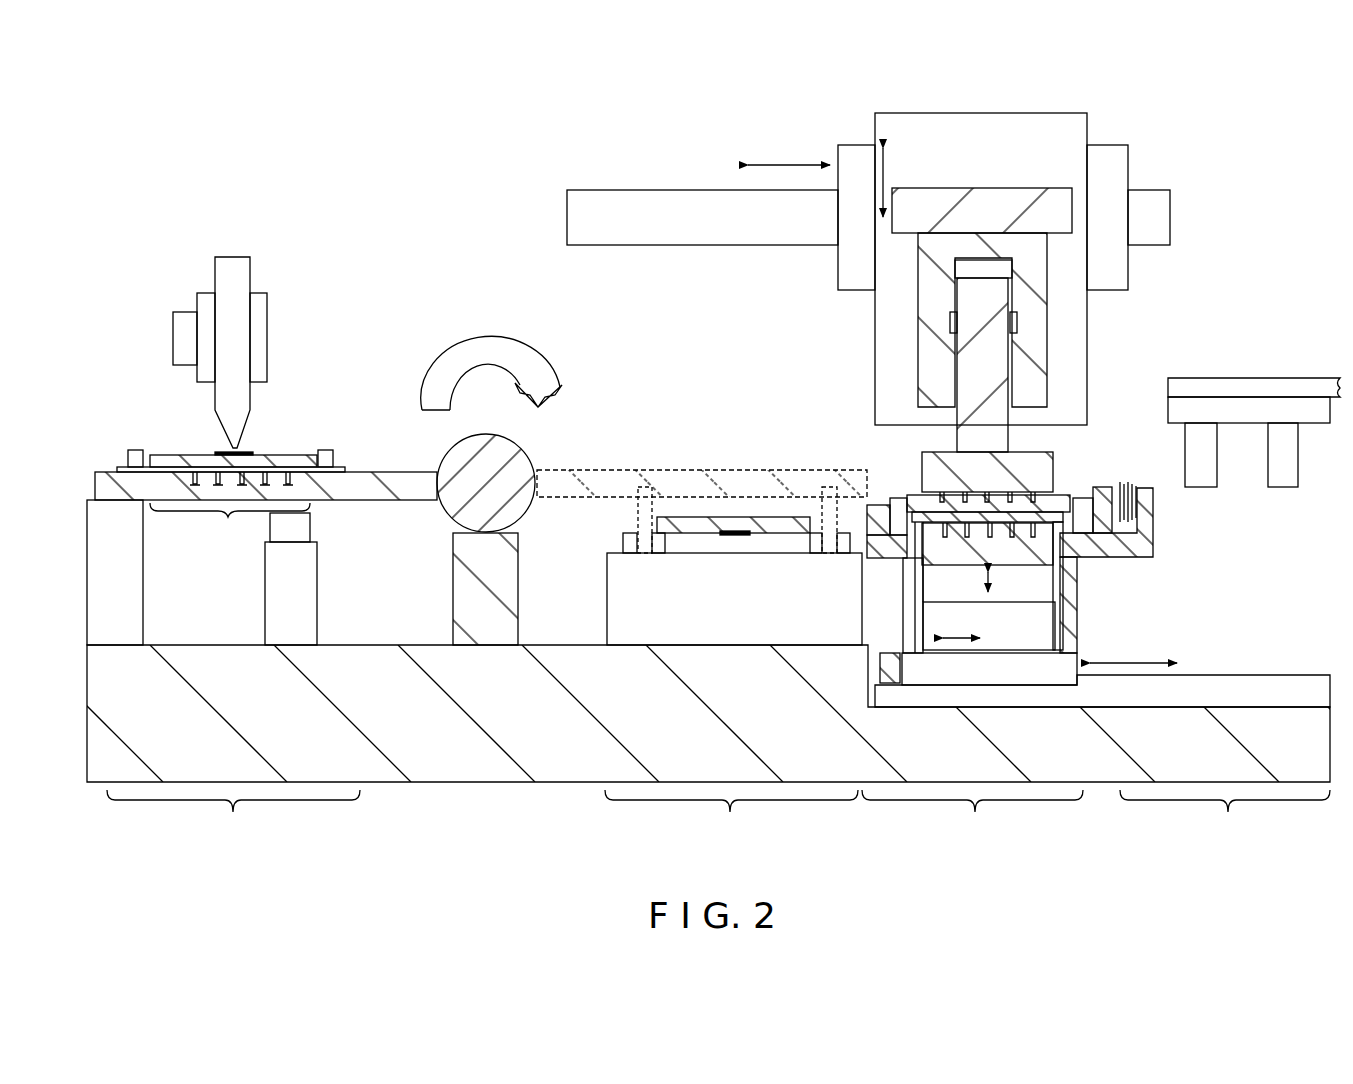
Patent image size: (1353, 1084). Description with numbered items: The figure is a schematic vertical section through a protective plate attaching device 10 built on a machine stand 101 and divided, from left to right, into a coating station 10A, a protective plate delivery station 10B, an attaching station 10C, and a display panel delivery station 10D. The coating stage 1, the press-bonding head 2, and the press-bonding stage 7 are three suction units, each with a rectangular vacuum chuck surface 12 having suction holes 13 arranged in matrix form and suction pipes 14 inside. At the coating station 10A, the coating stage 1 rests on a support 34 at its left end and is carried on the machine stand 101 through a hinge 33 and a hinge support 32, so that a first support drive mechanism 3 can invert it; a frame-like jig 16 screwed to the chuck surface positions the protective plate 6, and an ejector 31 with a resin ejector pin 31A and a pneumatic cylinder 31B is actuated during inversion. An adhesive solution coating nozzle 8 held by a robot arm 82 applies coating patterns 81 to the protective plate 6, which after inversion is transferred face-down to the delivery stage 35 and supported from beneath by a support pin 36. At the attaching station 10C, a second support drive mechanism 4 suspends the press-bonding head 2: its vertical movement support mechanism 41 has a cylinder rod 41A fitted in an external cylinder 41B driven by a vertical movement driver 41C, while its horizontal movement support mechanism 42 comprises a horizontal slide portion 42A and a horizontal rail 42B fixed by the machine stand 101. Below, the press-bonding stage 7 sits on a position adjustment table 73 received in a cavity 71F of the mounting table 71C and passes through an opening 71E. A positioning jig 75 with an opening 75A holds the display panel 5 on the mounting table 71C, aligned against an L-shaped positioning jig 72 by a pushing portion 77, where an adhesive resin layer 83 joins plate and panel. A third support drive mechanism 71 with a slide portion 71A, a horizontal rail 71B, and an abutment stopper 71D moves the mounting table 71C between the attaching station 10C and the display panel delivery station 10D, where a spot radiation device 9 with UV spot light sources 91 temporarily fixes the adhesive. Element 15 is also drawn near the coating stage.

The protective plate attaching device 10 is at (143, 170).
The second support drive mechanism 4 is at (1288, 192).
The coating stage 1 is at (380, 482).
The press-bonding head 2 is at (1040, 447).
The first support drive mechanism 3 is at (602, 382).
The display panel 5 is at (915, 496).
The protective plate 6 is at (295, 470).
The press-bonding stage 7 is at (987, 579).
The adhesive solution coating nozzle 8 is at (216, 275).
The spot radiation device 9 is at (1300, 380).
The vacuum chuck surface 12 is at (230, 524).
The suction holes 13 is at (200, 466).
The suction pipes 14 is at (185, 464).
The stopper 15 is at (326, 448).
The frame-like jig 16 is at (136, 448).
The ejector 31 is at (392, 518).
The resin ejector pin 31A is at (312, 528).
The pneumatic cylinder 31B is at (318, 568).
The hinge support 32 is at (455, 610).
The hinge 33 is at (528, 515).
The support 34 is at (140, 568).
The delivery stage 35 is at (610, 606).
The support pin 36 is at (625, 532).
The vertical movement support mechanism 41 is at (1166, 295).
The cylinder rod 41A is at (1030, 330).
The external cylinder 41B is at (1000, 335).
The vertical movement driver 41C is at (1075, 302).
The horizontal movement support mechanism 42 is at (1186, 100).
The horizontal slide portion 42A is at (1090, 140).
The horizontal rail 42B is at (1125, 190).
The third support drive mechanism 71 is at (1228, 622).
The slide portion 71A is at (1088, 662).
The horizontal rail 71B is at (1215, 676).
The mounting table 71C is at (1142, 558).
The abutment stopper 71D is at (888, 665).
The opening 71E is at (1078, 590).
The cavity 71F is at (918, 590).
The positioning jig 72 is at (878, 536).
The position adjustment table 73 is at (1080, 626).
The positioning jig 75 is at (878, 505).
The opening 75A is at (1075, 565).
The pushing portion 77 is at (1126, 482).
The coating patterns 81 is at (246, 452).
The robot arm 82 is at (175, 340).
The adhesive resin layer 83 is at (1033, 575).
The UV spot light sources 91 is at (1200, 488).
The machine stand 101 is at (218, 652).
The coating station 10A is at (233, 819).
The protective plate delivery station 10B is at (731, 819).
The attaching station 10C is at (972, 819).
The display panel delivery station 10D is at (1225, 819).